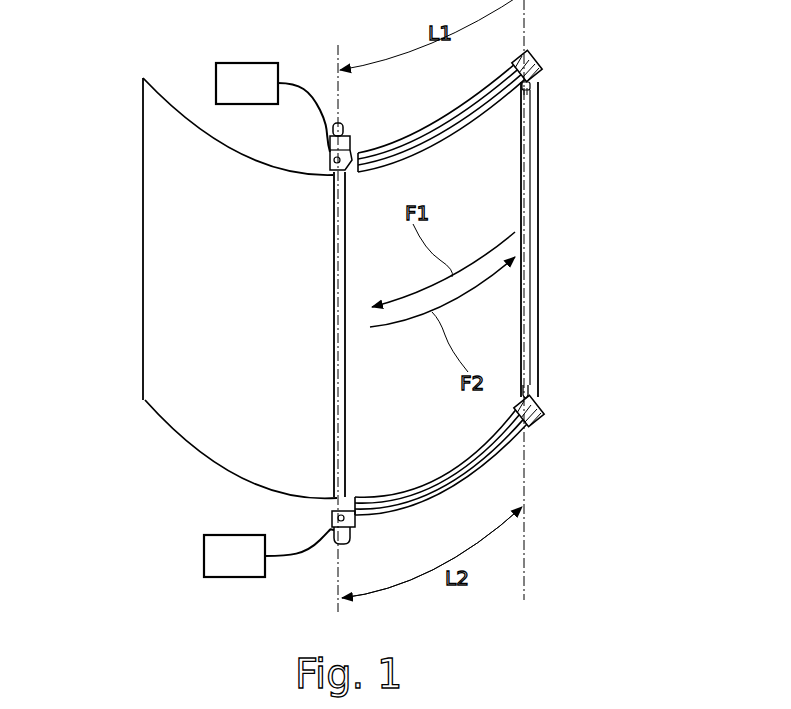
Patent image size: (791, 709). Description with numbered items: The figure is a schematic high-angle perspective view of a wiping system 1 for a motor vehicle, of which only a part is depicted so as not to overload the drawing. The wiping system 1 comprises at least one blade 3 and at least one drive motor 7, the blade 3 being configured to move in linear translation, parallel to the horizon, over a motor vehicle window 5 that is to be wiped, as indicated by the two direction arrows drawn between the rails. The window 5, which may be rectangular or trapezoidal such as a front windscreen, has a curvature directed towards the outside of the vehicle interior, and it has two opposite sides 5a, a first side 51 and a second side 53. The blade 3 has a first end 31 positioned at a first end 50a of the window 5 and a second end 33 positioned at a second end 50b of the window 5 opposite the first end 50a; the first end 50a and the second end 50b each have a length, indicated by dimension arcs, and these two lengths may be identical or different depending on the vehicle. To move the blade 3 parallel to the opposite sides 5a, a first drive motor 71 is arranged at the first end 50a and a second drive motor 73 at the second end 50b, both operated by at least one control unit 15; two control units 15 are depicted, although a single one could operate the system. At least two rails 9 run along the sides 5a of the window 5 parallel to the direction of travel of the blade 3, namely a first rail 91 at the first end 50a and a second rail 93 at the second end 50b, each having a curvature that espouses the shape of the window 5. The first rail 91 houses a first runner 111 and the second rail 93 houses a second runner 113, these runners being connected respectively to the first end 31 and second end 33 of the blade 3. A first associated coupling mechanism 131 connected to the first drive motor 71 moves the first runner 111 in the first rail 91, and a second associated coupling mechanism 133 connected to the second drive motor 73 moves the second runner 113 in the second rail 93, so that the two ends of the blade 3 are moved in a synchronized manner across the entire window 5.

The wiping system 1 is at (648, 168).
The blade 3 is at (569, 239).
The motor vehicle window 5 is at (160, 340).
The opposite sides of the window 5a is at (458, 142).
The drive motor 7 is at (340, 134).
The rails 9 is at (441, 357).
The control unit 15 is at (269, 320).
The first end of the blade 31 is at (532, 88).
The second end of the blade 33 is at (530, 292).
The first end of the window 50a is at (172, 106).
The second end of the window 50b is at (187, 450).
The first side of the window 51 is at (513, 197).
The second side of the window 53 is at (160, 218).
The first drive motor 71 is at (330, 160).
The second drive motor 73 is at (342, 548).
The first rail 91 is at (432, 130).
The second rail 93 is at (490, 475).
The first runner 111 is at (540, 67).
The second runner 113 is at (542, 412).
The first associated coupling mechanism 131 is at (352, 154).
The second associated coupling mechanism 133 is at (358, 523).